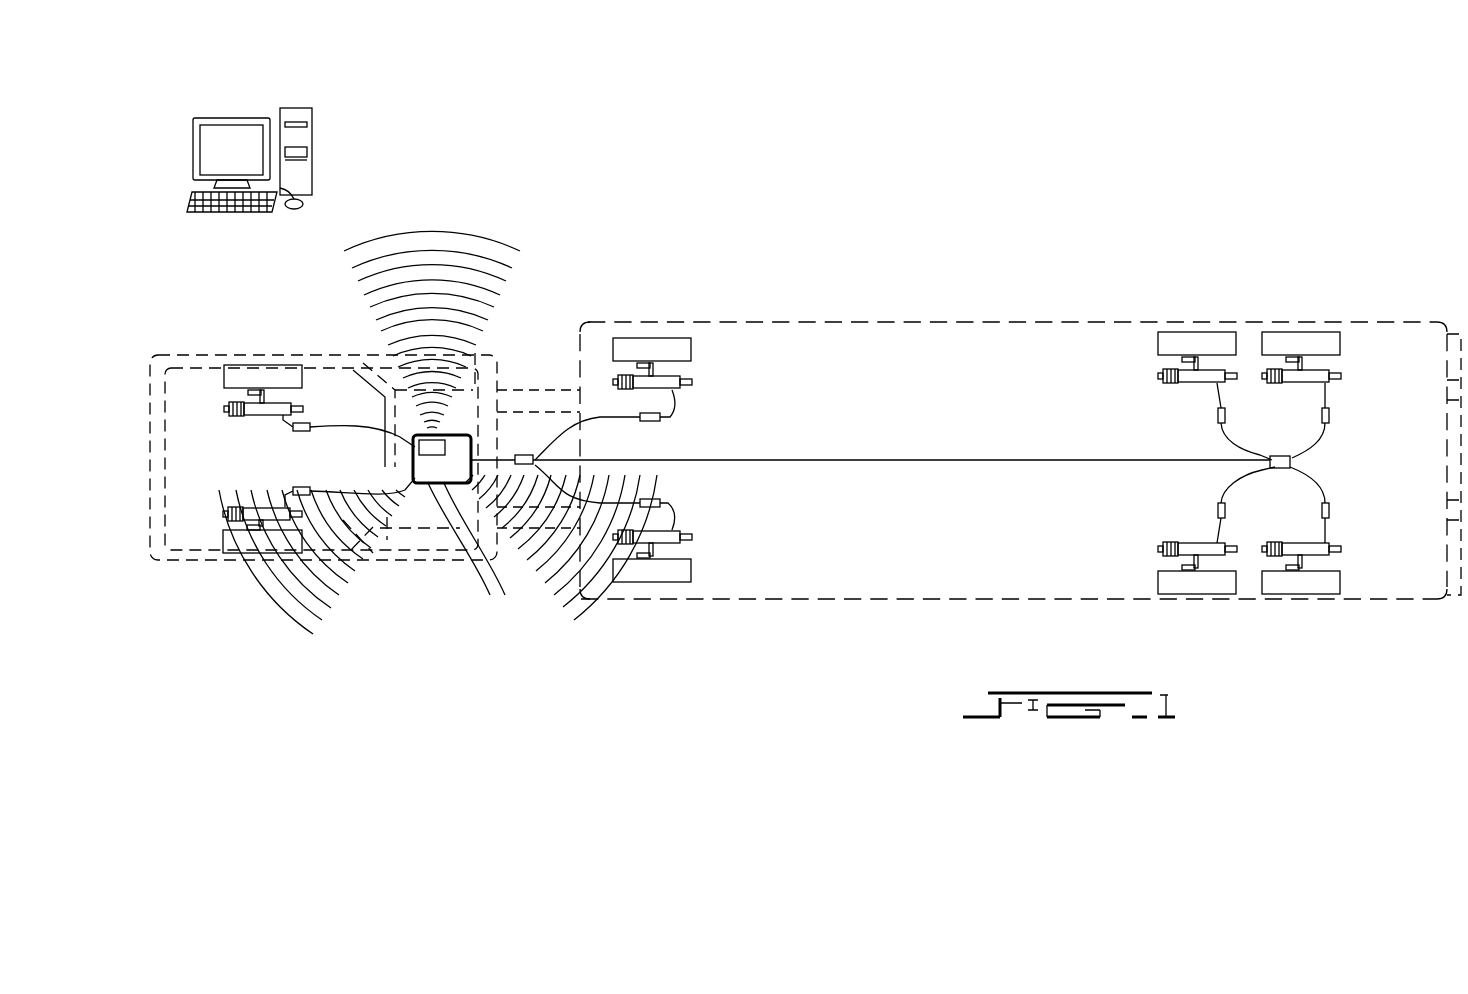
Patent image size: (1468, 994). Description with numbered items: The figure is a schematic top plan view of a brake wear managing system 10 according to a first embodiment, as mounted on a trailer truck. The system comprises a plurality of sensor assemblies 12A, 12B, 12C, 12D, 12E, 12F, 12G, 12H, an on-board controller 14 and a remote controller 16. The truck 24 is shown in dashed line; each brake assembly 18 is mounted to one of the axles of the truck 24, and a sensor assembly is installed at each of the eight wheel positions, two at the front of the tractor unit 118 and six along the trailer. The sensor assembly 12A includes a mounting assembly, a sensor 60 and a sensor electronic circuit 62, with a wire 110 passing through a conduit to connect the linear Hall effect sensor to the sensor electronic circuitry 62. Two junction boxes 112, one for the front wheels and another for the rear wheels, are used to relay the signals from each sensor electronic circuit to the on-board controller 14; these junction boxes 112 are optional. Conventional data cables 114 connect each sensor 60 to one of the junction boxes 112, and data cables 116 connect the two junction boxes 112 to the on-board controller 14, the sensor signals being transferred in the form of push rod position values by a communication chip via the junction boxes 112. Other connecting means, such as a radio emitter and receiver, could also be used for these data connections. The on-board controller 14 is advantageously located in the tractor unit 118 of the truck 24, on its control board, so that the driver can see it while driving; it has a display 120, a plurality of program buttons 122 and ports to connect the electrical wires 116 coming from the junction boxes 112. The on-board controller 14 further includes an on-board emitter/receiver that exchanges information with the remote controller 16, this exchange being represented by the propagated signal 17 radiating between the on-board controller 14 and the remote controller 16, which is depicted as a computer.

The brake wear managing system 10 is at (556, 186).
The sensor assembly 12A is at (283, 401).
The sensor assembly 12B is at (285, 529).
The sensor assembly 12C is at (672, 376).
The sensor assembly 12D is at (672, 547).
The sensor assembly 12E is at (1218, 368).
The sensor assembly 12F is at (1217, 558).
The sensor assembly 12G is at (1325, 368).
The sensor assembly 12H is at (1325, 558).
The on-board controller 14 is at (457, 440).
The remote controller 16 is at (305, 137).
The propagated signal 17 is at (483, 235).
The brake assembly 18 is at (633, 360).
The truck 24 is at (950, 318).
The sensor 60 is at (262, 410).
The sensor electronic circuit 62 is at (303, 432).
The wire 110 is at (283, 413).
The junction box 112 is at (540, 458).
The data cable 114 is at (525, 413).
The data cable 116 is at (480, 455).
The tractor unit 118 is at (428, 525).
The display 120 is at (427, 443).
The program buttons 122 is at (473, 553).